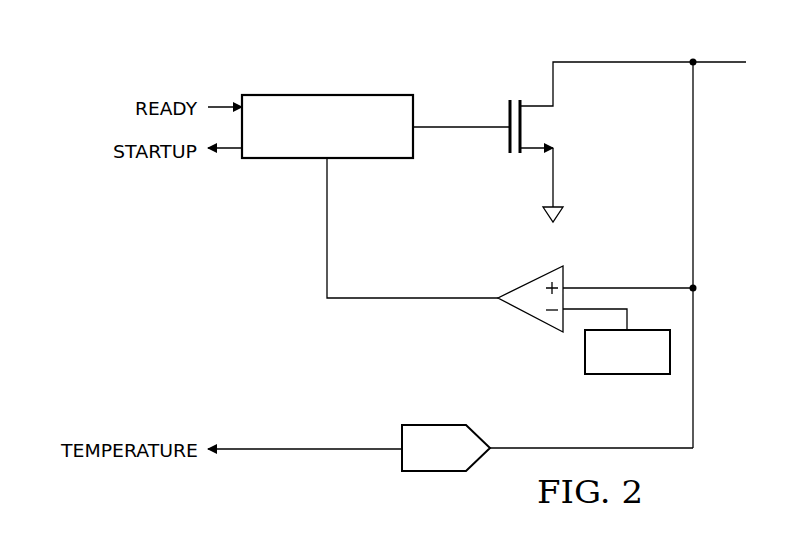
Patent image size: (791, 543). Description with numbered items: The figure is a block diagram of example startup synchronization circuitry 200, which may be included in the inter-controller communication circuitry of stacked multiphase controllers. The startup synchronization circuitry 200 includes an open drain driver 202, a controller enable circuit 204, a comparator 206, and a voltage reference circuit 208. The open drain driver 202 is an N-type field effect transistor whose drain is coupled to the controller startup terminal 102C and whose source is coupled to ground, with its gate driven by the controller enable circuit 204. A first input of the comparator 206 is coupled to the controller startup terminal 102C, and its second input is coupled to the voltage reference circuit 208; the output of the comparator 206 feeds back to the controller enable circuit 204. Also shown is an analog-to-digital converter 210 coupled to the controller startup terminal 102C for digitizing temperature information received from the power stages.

The startup synchronization circuitry 200 is at (72, 64).
The open drain driver 202 is at (508, 117).
The controller enable circuit 204 is at (317, 95).
The comparator 206 is at (532, 280).
The voltage reference circuit 208 is at (636, 374).
The analog-to-digital converter 210 is at (432, 471).
The controller startup terminal 102C is at (718, 62).